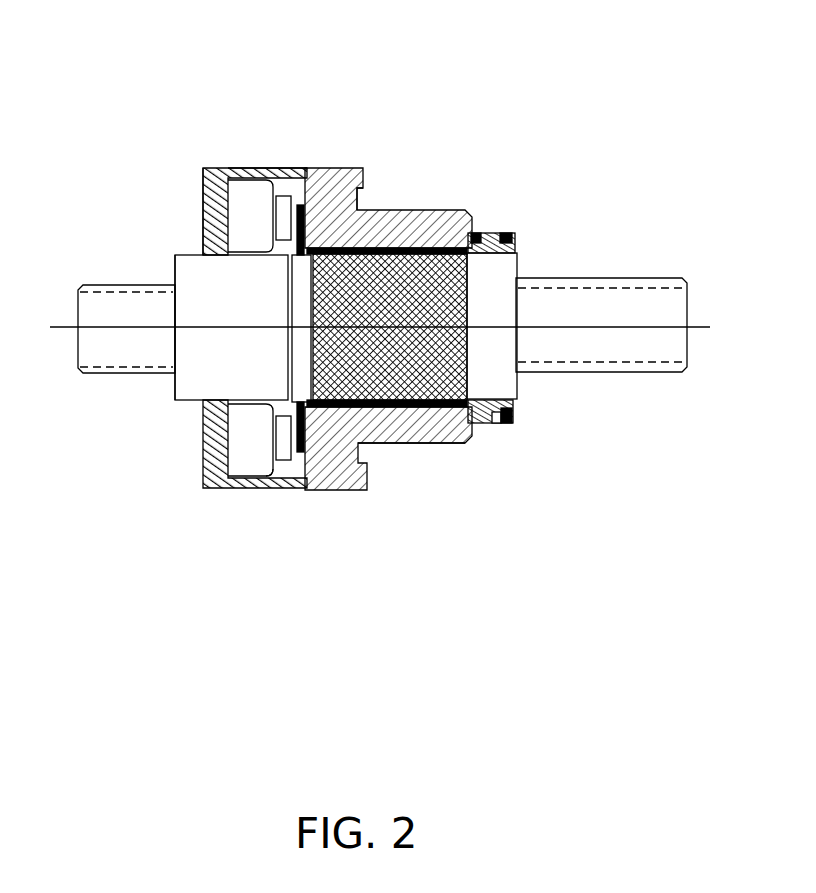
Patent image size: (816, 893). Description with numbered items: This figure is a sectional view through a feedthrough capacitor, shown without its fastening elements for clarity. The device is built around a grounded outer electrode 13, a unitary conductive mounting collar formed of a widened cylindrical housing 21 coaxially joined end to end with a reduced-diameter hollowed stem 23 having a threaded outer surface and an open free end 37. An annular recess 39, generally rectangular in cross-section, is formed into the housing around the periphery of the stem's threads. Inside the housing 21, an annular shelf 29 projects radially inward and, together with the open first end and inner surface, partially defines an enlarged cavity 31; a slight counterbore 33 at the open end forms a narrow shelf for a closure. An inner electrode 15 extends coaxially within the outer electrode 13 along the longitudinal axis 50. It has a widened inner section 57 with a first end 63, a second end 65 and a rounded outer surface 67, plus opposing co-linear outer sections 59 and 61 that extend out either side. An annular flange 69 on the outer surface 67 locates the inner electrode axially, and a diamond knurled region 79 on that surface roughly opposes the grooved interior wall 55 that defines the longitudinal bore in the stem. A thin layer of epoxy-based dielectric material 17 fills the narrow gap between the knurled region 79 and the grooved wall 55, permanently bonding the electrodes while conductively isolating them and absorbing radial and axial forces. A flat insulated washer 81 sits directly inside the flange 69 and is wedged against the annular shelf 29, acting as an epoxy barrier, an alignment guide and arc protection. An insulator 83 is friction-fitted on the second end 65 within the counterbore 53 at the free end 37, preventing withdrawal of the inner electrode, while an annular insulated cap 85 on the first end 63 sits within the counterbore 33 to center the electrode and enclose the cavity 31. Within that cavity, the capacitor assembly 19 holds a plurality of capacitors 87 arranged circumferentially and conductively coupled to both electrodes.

The outer electrode 13 is at (312, 167).
The inner electrode 15 is at (184, 254).
The dielectric material 17 is at (407, 423).
The capacitor assembly 19 is at (262, 450).
The widened cylindrical housing 21 is at (333, 166).
The stem 23 is at (399, 262).
The annular shelf 29 is at (305, 455).
The enlarged cavity 31 is at (250, 440).
The counterbore 33 is at (204, 488).
The open free end 37 is at (473, 214).
The annular recess 39 is at (371, 188).
The longitudinal axis 50 is at (697, 322).
The counterbore 53 is at (481, 431).
The grooved interior wall 55 is at (445, 423).
The widened inner section 57 is at (249, 282).
The outer section 59 is at (123, 374).
The outer section 61 is at (617, 380).
The first end 63 is at (178, 273).
The second end 65 is at (517, 268).
The rounded outer surface 67 is at (497, 278).
The flange 69 is at (289, 245).
The knurled region 79 is at (404, 250).
The insulated washer 81 is at (306, 450).
The insulator 83 is at (508, 427).
The insulated cap 85 is at (200, 198).
The capacitor 87 is at (286, 453).